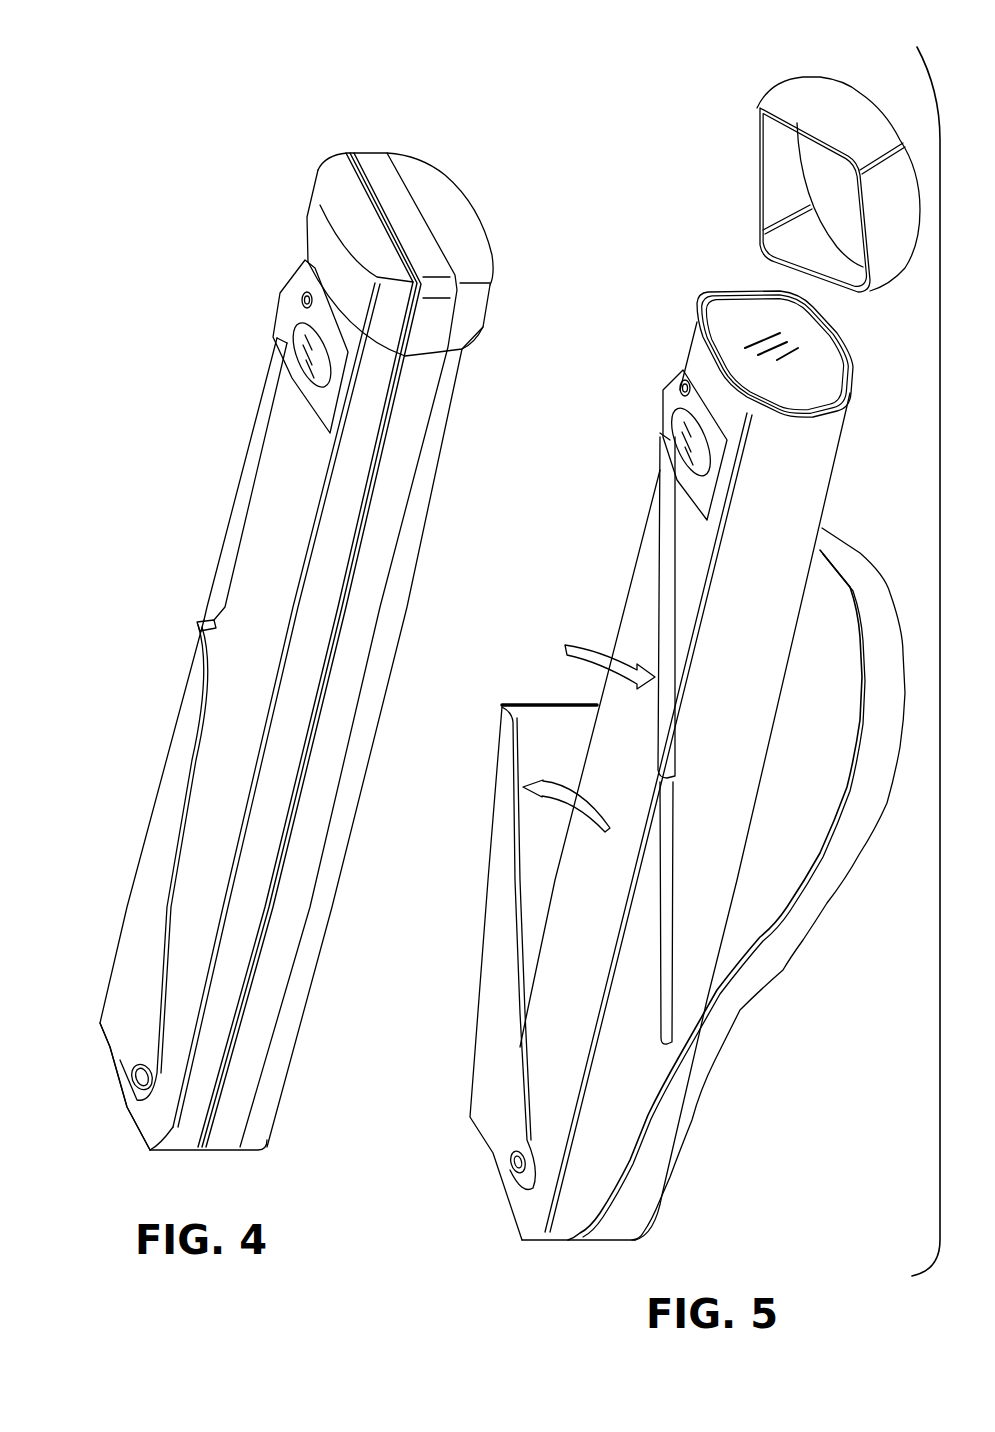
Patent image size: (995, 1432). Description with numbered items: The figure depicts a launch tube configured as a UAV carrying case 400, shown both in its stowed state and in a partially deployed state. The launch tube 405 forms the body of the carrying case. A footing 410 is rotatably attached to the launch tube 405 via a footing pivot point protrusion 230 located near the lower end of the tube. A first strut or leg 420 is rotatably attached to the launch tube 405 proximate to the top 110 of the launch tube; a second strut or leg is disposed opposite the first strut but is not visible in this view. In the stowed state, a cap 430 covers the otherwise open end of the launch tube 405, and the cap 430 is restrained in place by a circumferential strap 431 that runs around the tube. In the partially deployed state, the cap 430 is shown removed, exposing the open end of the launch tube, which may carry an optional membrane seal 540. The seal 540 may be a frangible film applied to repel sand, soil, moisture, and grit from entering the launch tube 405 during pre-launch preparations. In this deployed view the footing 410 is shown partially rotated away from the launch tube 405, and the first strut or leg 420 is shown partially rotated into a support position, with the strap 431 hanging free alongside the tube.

In FIG. 4, the UAV carrying case 400 is at (90, 78).
In FIG. 4, the top of the launch tube 110 is at (266, 289).
In FIG. 4, the footing pivot point protrusion 230 is at (140, 1073).
In FIG. 4, the launch tube 405 is at (130, 1108).
In FIG. 4, the footing 410 is at (156, 855).
In FIG. 5, the footing 410 is at (489, 959).
In FIG. 4, the first strut or leg 420 is at (243, 497).
In FIG. 5, the first strut or leg 420 is at (667, 493).
In FIG. 4, the cap 430 is at (337, 177).
In FIG. 5, the cap 430 is at (797, 97).
In FIG. 4, the circumferential strap 431 is at (377, 177).
In FIG. 5, the circumferential strap 431 is at (868, 582).
In FIG. 5, the membrane seal 540 is at (745, 332).